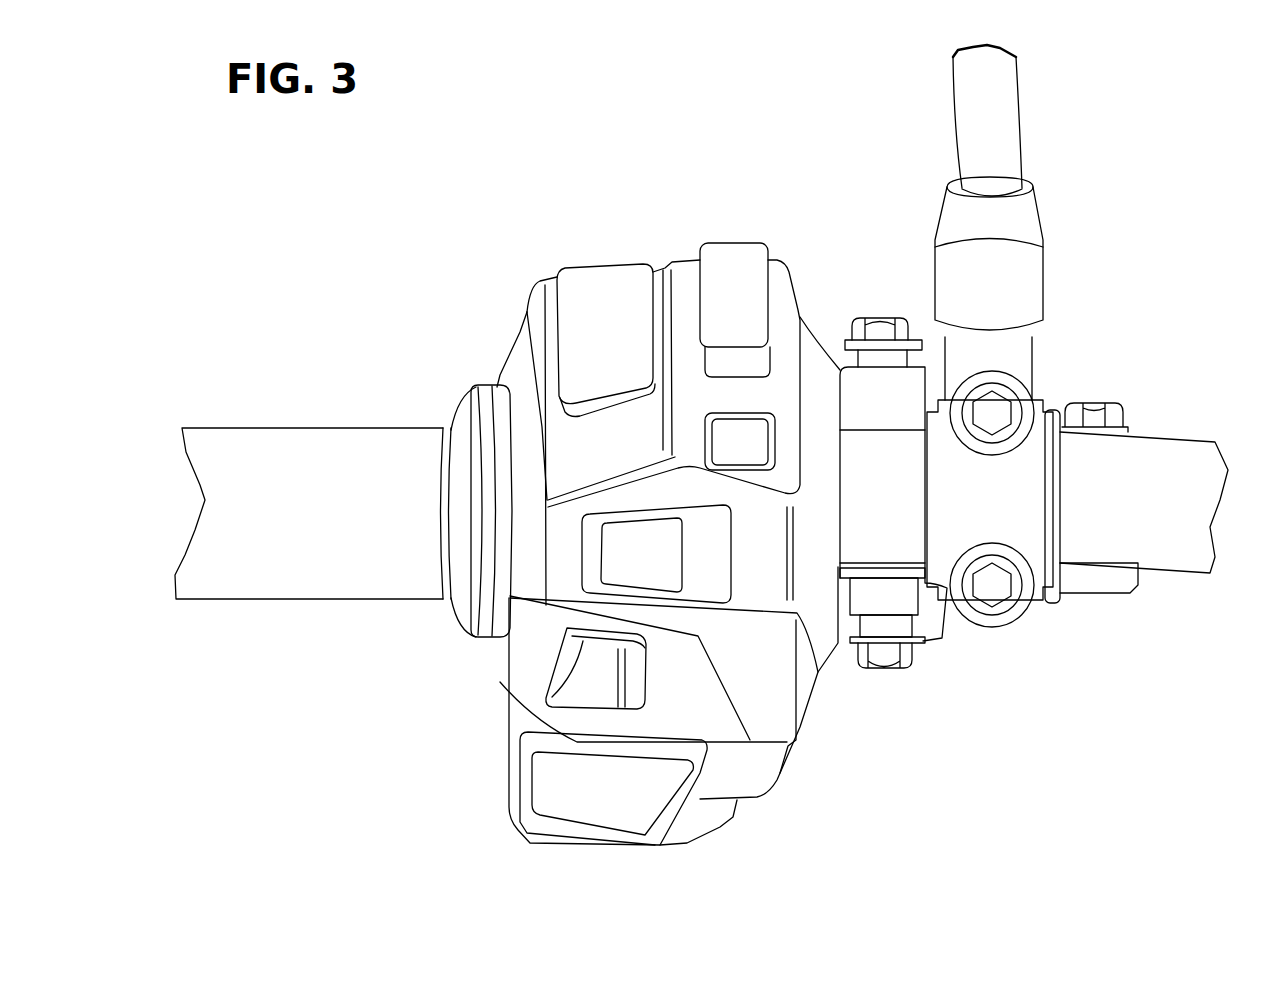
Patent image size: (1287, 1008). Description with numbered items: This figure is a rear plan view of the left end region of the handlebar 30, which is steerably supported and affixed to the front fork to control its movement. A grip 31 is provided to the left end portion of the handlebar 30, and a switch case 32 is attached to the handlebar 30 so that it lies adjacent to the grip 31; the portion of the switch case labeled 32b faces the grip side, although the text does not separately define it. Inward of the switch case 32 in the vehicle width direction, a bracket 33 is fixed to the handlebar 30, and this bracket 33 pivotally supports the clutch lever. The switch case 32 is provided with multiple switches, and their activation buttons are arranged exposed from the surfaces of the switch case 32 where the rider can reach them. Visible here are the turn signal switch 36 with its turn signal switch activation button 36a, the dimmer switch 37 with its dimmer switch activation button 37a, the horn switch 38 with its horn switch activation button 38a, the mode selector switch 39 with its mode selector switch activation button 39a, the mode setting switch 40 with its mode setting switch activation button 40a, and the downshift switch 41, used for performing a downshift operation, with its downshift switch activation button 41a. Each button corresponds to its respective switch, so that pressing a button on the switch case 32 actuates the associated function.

The handlebar 30 is at (1150, 440).
The grip 31 is at (328, 437).
The switch case 32 is at (822, 352).
The housing flared portion 32b is at (527, 322).
The bracket 33 is at (918, 383).
The turn signal switch 36 is at (540, 671).
The turn signal switch activation button 36a is at (585, 677).
The dimmer switch 37 is at (582, 258).
The dimmer switch activation button 37a is at (613, 282).
The horn switch 38 is at (568, 555).
The horn switch activation button 38a is at (670, 560).
The mode selector switch 39 is at (750, 229).
The mode selector switch activation button 39a is at (717, 252).
The mode setting switch 40 is at (784, 435).
The mode setting switch activation button 40a is at (718, 441).
The downshift switch 41 is at (505, 776).
The downshift switch activation button 41a is at (650, 812).